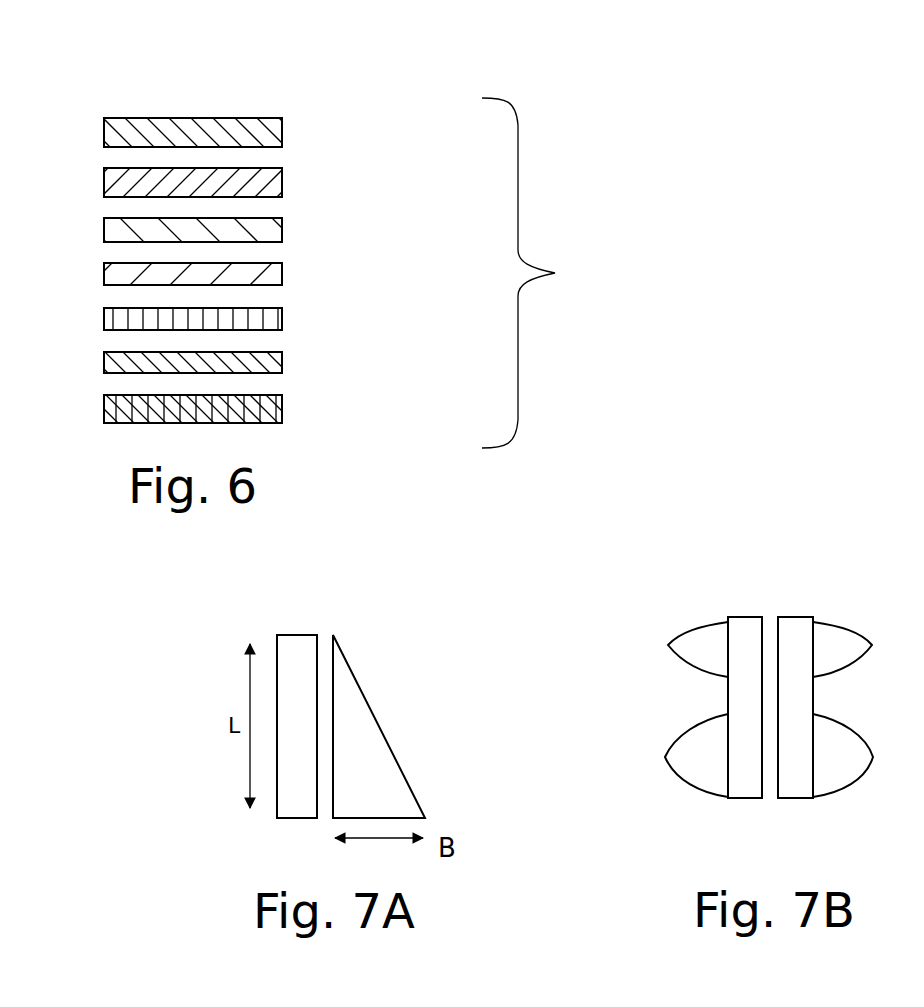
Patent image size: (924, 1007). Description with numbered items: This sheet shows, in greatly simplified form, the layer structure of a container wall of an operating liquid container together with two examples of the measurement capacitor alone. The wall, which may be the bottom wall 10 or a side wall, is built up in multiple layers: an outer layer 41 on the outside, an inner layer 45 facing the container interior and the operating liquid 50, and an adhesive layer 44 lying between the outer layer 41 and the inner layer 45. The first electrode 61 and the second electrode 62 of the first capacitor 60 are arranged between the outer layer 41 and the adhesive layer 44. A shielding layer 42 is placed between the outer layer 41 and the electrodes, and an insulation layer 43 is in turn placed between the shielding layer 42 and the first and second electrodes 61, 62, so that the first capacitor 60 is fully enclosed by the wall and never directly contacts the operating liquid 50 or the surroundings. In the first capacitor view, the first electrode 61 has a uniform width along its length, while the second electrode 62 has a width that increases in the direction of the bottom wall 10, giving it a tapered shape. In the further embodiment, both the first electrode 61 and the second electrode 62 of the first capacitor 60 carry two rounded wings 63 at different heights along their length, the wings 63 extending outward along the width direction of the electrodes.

In FIG. 6, the bottom wall 10 is at (568, 273).
In FIG. 6, the outer layer 41 is at (284, 410).
In FIG. 6, the shielding layer 42 is at (284, 362).
In FIG. 6, the insulation layer 43 is at (284, 318).
In FIG. 6, the adhesive layer 44 is at (284, 230).
In FIG. 6, the inner layer 45 is at (284, 185).
In FIG. 6, the operating liquid 50 is at (284, 132).
In FIG. 7A, the first capacitor 60 is at (214, 637).
In FIG. 7B, the first capacitor 60 is at (808, 584).
In FIG. 6, the first electrode 61 is at (284, 273).
In FIG. 7A, the first electrode 61 is at (295, 810).
In FIG. 7B, the first electrode 61 is at (745, 785).
In FIG. 7A, the second electrode 62 is at (362, 706).
In FIG. 7B, the second electrode 62 is at (797, 785).
In FIG. 7B, the wings 63 is at (708, 633).